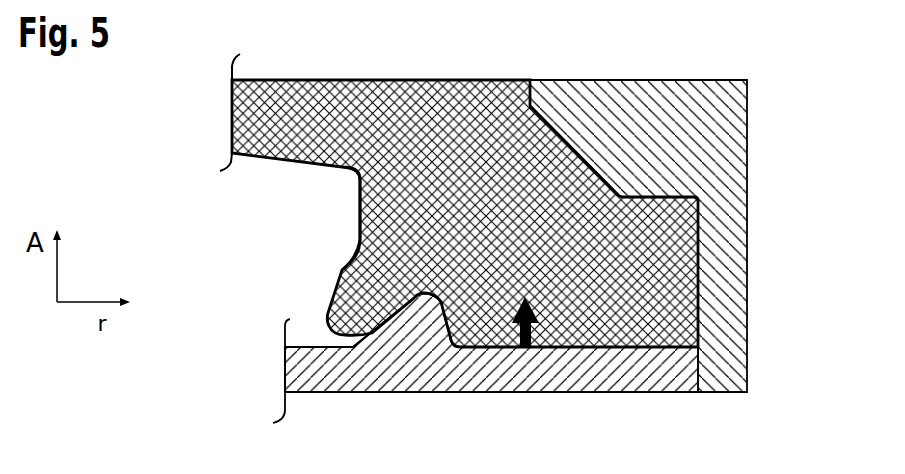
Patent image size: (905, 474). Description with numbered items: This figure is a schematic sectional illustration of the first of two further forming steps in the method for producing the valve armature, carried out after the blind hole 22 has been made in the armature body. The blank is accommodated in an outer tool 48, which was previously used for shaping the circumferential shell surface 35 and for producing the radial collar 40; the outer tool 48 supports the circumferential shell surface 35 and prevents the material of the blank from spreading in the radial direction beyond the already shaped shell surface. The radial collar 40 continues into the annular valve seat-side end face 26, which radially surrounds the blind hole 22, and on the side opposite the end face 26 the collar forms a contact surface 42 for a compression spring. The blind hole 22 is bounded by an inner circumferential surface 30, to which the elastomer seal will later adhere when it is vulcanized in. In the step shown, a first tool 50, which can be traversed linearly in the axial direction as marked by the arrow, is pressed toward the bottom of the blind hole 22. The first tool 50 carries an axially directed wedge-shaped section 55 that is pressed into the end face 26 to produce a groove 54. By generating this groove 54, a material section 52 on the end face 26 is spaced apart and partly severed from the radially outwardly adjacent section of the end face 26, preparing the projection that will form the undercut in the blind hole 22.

The blind hole 22 is at (246, 253).
The valve seat-side end face 26 is at (668, 353).
The inner circumferential surface 30 is at (358, 193).
The circumferential shell surface 35 is at (560, 133).
The radial collar 40 is at (677, 278).
The contact surface 42 is at (660, 185).
The outer tool 48 is at (723, 123).
The first tool 50 is at (580, 365).
The material section 52 is at (325, 392).
The groove 54 is at (450, 318).
The wedge-shaped section 55 is at (420, 325).